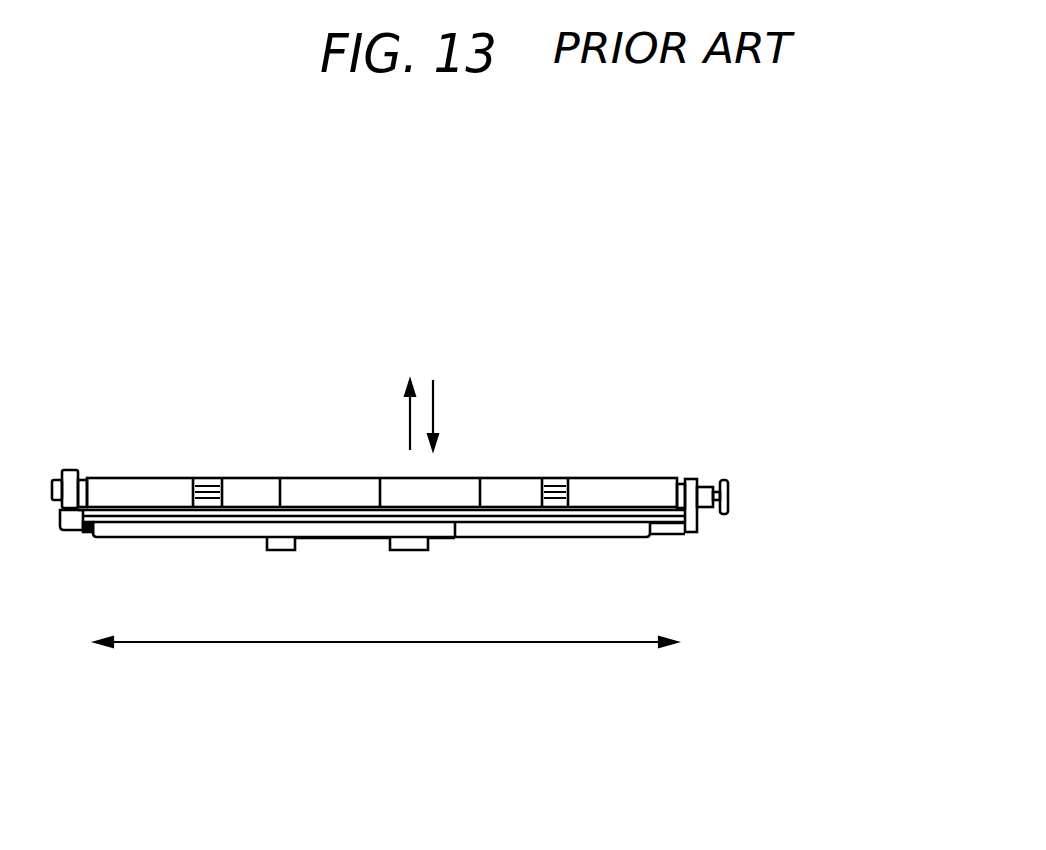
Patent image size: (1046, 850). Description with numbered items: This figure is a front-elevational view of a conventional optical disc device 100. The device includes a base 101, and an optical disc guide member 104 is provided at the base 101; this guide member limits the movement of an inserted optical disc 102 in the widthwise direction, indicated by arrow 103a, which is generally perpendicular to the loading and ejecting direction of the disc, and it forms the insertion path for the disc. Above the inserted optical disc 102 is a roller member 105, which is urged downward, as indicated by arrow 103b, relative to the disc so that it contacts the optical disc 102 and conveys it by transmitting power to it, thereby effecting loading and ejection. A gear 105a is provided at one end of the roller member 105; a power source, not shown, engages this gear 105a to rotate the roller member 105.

The optical disc device 100 is at (113, 448).
The base 101 is at (697, 522).
The optical disc 102 is at (173, 522).
The widthwise direction arrow 103a is at (392, 645).
The downward urging direction arrow 103b is at (433, 407).
The optical disc guide member 104 is at (560, 537).
The roller member 105 is at (333, 487).
The gear 105a is at (722, 480).